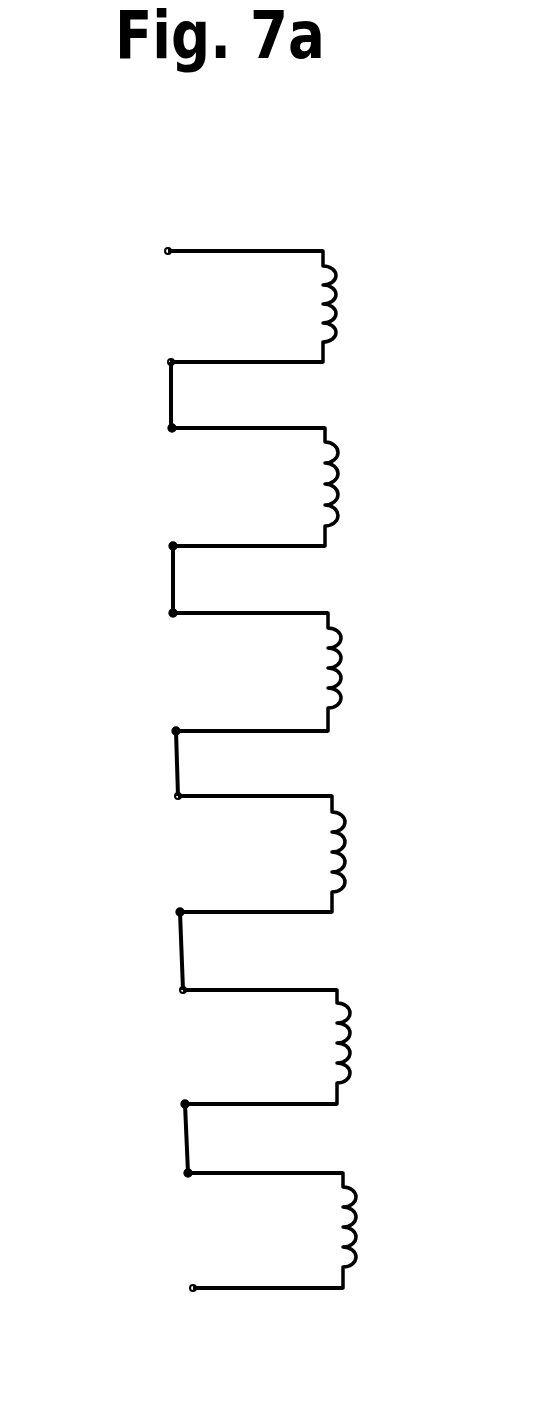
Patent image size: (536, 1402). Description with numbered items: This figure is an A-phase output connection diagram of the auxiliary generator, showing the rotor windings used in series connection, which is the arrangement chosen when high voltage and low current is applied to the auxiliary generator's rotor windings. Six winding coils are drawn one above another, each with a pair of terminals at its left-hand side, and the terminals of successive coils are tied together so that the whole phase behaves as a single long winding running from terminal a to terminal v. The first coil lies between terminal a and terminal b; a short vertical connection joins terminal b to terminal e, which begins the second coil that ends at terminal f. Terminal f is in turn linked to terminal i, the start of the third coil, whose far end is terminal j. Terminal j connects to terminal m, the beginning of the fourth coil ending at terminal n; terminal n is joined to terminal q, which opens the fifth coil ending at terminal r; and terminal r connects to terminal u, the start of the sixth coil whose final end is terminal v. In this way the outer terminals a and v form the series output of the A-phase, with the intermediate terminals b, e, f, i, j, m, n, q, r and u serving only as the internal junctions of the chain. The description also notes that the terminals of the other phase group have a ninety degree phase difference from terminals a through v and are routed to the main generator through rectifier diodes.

The terminal a is at (220, 251).
The terminal b is at (228, 364).
The terminal e is at (229, 429).
The terminal f is at (234, 547).
The terminal i is at (238, 613).
The terminal j is at (236, 727).
The terminal m is at (233, 795).
The terminal n is at (234, 911).
The terminal q is at (237, 989).
The terminal r is at (242, 1104).
The terminal u is at (244, 1172).
The terminal v is at (247, 1286).